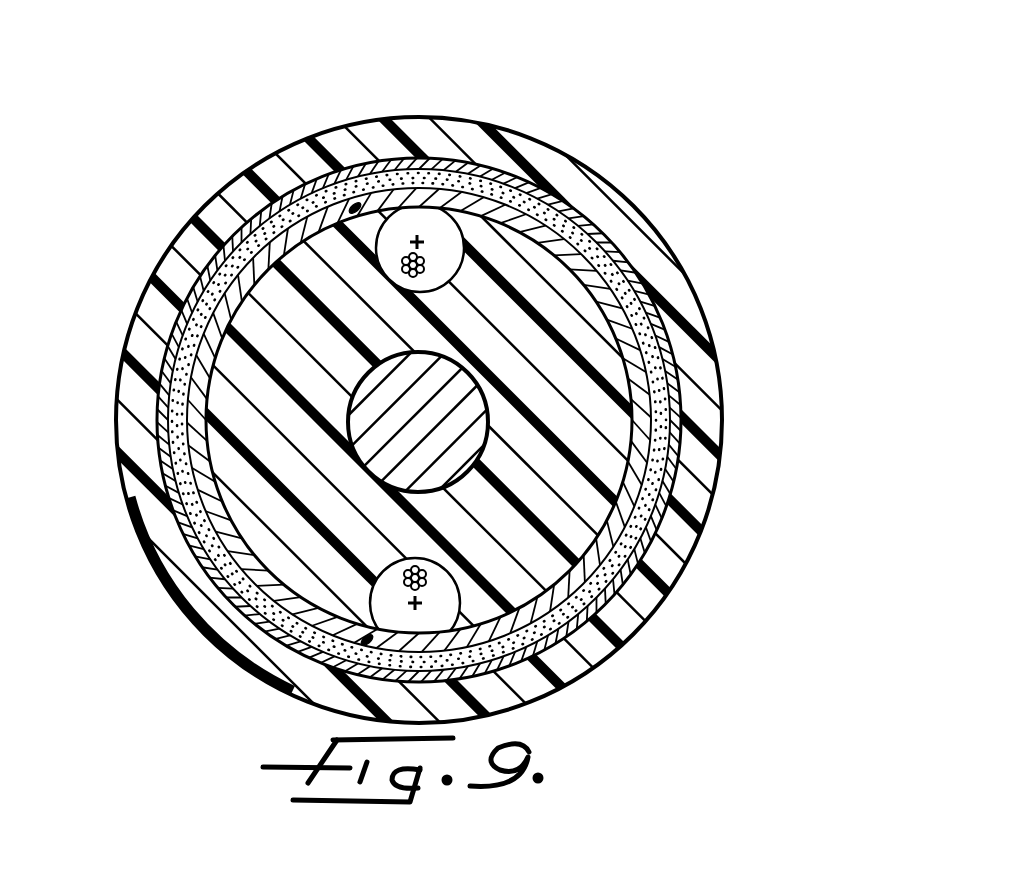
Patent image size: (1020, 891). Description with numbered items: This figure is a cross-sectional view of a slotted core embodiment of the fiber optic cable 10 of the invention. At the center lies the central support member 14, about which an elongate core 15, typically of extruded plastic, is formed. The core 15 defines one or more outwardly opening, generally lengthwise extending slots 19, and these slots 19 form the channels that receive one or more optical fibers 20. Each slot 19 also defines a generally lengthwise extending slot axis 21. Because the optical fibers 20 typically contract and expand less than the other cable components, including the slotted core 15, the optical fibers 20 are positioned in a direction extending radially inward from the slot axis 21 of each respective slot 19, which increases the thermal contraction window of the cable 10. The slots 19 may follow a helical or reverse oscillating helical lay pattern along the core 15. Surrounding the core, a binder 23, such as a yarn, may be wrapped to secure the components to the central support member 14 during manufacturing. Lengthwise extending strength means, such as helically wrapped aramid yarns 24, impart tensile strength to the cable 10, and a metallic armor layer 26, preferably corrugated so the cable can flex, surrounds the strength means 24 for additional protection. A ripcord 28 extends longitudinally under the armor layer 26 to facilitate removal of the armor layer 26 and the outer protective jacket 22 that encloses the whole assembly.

The fiber optic cable 10 is at (735, 250).
The central support member 14 is at (478, 455).
The core 15 is at (540, 576).
The slots 19 is at (440, 243).
The optical fibers 20 is at (407, 268).
The slot axis 21 is at (420, 241).
The protective jacket 22 is at (692, 314).
The binder 23 is at (357, 206).
The aramid yarns 24 is at (262, 226).
The metallic armor layer 26 is at (622, 257).
The ripcord 28 is at (657, 402).